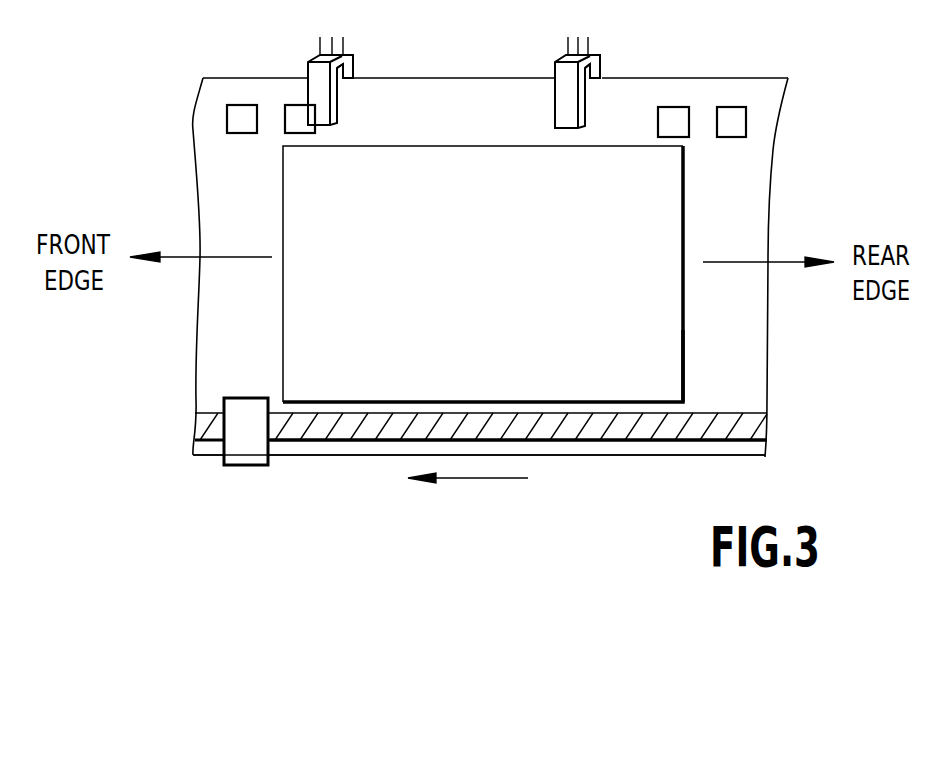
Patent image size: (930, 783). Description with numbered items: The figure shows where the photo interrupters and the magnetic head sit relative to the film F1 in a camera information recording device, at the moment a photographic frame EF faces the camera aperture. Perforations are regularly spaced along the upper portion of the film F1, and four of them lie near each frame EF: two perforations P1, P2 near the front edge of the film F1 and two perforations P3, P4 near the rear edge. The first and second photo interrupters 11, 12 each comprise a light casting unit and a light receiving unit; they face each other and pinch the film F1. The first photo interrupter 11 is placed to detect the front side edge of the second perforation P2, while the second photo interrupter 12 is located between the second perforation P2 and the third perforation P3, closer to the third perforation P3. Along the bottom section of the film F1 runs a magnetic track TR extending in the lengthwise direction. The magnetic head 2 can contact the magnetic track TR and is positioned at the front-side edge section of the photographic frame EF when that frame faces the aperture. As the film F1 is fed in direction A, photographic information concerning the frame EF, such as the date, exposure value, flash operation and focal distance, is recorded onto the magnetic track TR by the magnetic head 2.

The first perforation P1 is at (230, 106).
The second perforation P2 is at (291, 106).
The third perforation P3 is at (668, 108).
The fourth perforation P4 is at (731, 108).
The first perforation detection photo interrupter 11 is at (347, 56).
The second perforation detection photo interrupter 12 is at (556, 66).
The magnetic head 2 is at (250, 457).
The magnetic track TR is at (338, 437).
The photographic frame EF is at (683, 390).
The film F1 is at (598, 457).
The film feeding direction A is at (468, 497).